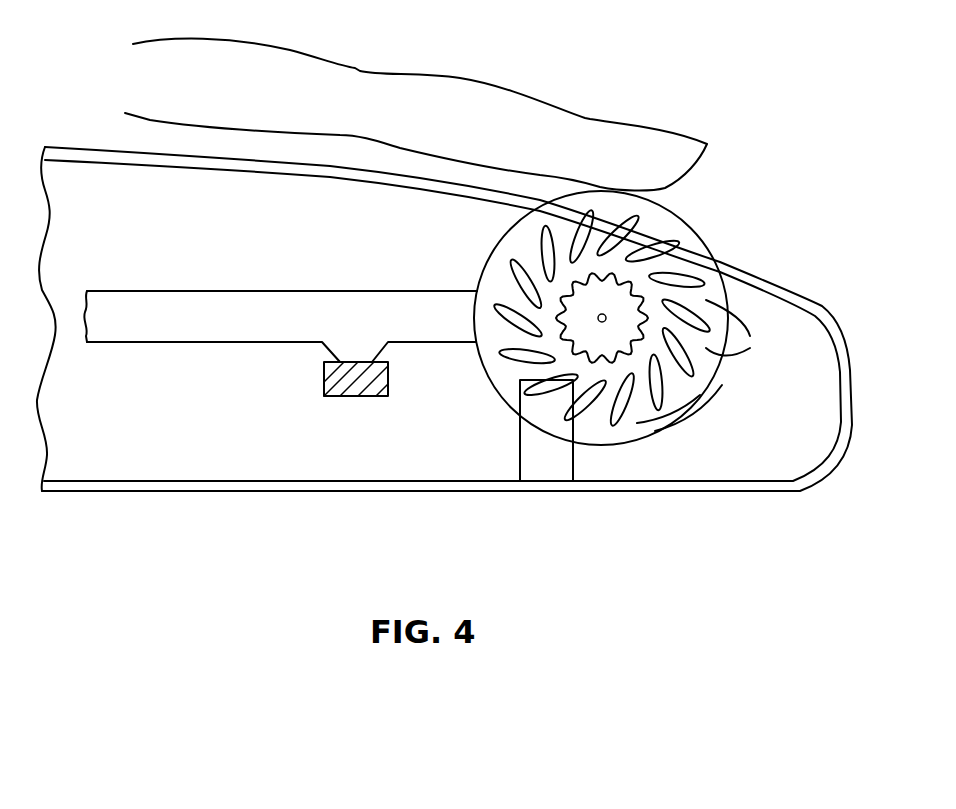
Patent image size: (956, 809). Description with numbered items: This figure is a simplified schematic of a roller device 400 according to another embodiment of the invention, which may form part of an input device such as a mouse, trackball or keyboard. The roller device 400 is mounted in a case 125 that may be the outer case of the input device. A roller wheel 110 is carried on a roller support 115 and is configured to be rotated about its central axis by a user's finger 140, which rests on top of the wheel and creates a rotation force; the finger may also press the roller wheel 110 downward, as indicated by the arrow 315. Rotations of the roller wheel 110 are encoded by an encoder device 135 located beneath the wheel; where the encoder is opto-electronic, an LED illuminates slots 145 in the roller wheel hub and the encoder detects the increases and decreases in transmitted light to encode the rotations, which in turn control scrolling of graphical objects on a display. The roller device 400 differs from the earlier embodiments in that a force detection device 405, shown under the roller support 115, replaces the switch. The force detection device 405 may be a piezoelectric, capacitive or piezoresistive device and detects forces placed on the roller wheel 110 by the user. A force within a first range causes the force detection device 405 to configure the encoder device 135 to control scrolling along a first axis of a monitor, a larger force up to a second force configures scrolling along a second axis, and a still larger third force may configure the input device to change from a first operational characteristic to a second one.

The roller device 400 is at (200, 213).
The roller support 115 is at (262, 291).
The finger 140 is at (543, 92).
The arrow 315 is at (757, 235).
The slots 145 is at (756, 329).
The roller wheel 110 is at (700, 402).
The encoder device 135 is at (519, 441).
The force detection device 405 is at (392, 376).
The case 125 is at (632, 495).